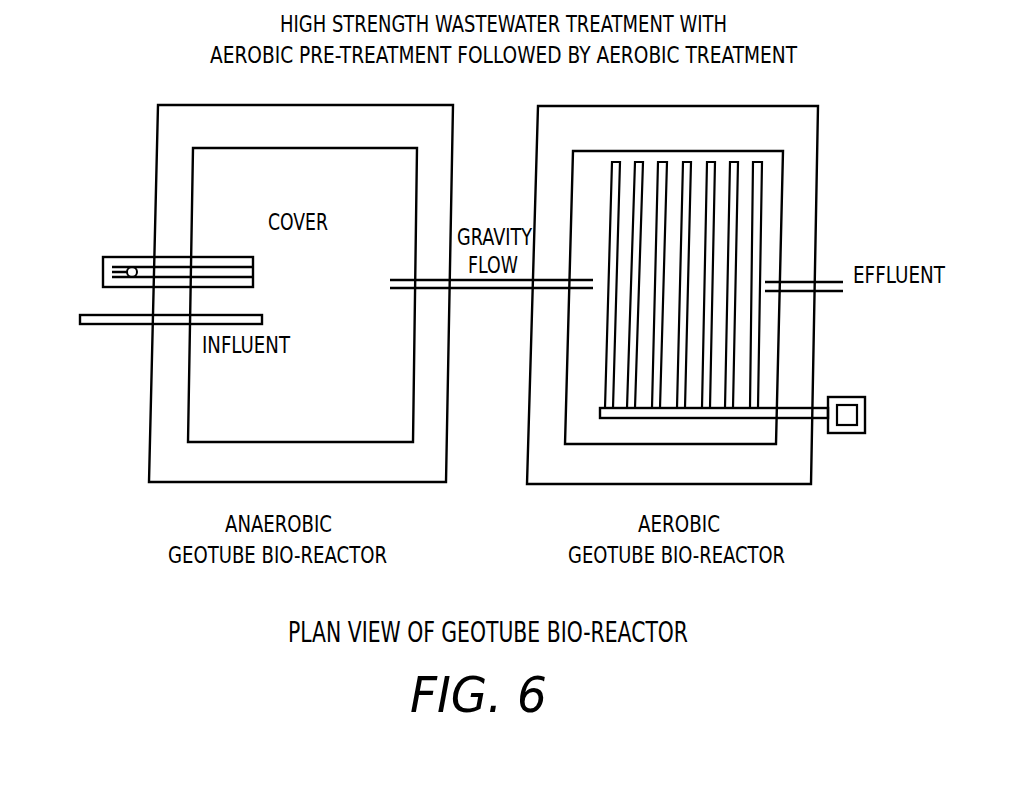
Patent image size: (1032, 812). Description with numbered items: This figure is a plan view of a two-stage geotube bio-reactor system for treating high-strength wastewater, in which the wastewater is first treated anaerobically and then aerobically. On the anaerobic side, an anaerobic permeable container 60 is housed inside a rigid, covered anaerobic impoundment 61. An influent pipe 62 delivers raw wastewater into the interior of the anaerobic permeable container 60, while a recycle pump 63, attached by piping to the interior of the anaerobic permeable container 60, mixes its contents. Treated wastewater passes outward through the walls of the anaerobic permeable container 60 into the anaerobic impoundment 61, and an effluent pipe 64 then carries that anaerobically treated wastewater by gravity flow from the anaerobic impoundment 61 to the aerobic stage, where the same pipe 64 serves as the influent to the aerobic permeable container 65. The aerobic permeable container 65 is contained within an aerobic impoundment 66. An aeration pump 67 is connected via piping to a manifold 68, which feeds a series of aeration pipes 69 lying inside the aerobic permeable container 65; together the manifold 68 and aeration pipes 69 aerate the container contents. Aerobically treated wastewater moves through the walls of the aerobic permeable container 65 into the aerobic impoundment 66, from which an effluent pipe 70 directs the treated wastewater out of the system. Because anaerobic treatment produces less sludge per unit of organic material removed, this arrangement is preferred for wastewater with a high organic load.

The anaerobic permeable container 60 is at (203, 388).
The anaerobic impoundment 61 is at (162, 433).
The influent pipe 62 is at (127, 323).
The recycle pump 63 is at (112, 270).
The effluent pipe 64 is at (489, 292).
The aerobic permeable container 65 is at (790, 190).
The aerobic impoundment 66 is at (808, 138).
The aeration pump 67 is at (850, 415).
The manifold 68 is at (695, 412).
The aeration pipes 69 is at (610, 347).
The effluent pipe 70 is at (826, 278).